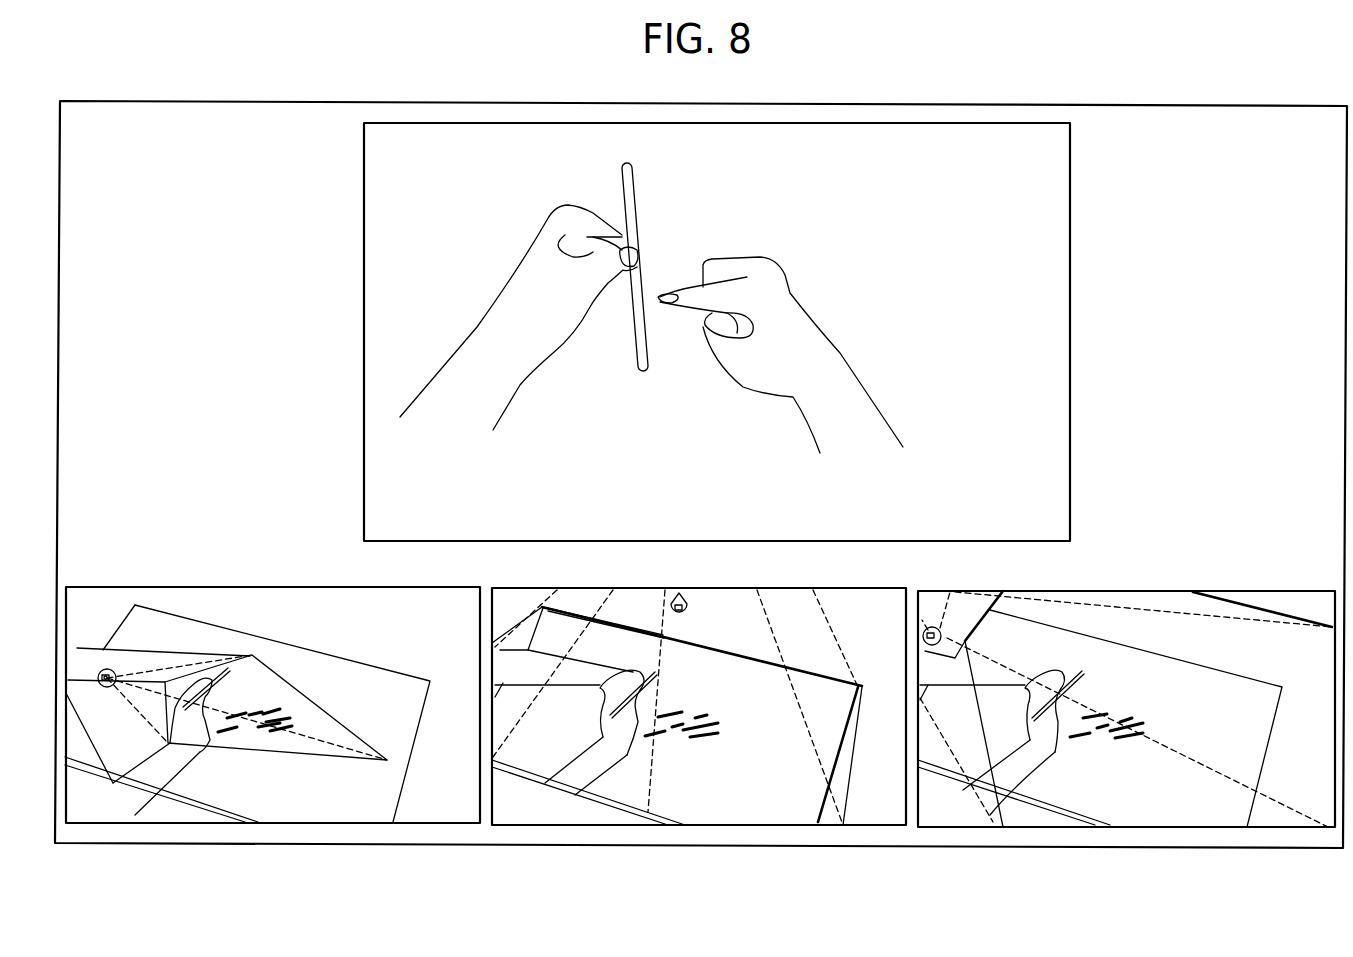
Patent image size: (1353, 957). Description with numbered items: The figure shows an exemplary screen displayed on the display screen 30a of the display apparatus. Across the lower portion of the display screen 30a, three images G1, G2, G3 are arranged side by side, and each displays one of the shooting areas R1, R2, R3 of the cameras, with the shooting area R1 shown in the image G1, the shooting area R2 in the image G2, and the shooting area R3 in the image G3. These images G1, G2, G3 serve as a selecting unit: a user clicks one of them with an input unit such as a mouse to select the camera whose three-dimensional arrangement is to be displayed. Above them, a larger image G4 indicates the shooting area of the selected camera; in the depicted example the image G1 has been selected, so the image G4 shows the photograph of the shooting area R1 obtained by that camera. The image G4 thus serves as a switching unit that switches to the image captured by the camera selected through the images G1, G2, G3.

The display screen 30a is at (1297, 104).
The image G4 is at (1013, 124).
The image G1 is at (272, 745).
The image G2 is at (699, 745).
The image G3 is at (1126, 747).
The shooting area R1 is at (320, 766).
The shooting area R2 is at (601, 812).
The shooting area R3 is at (1037, 808).